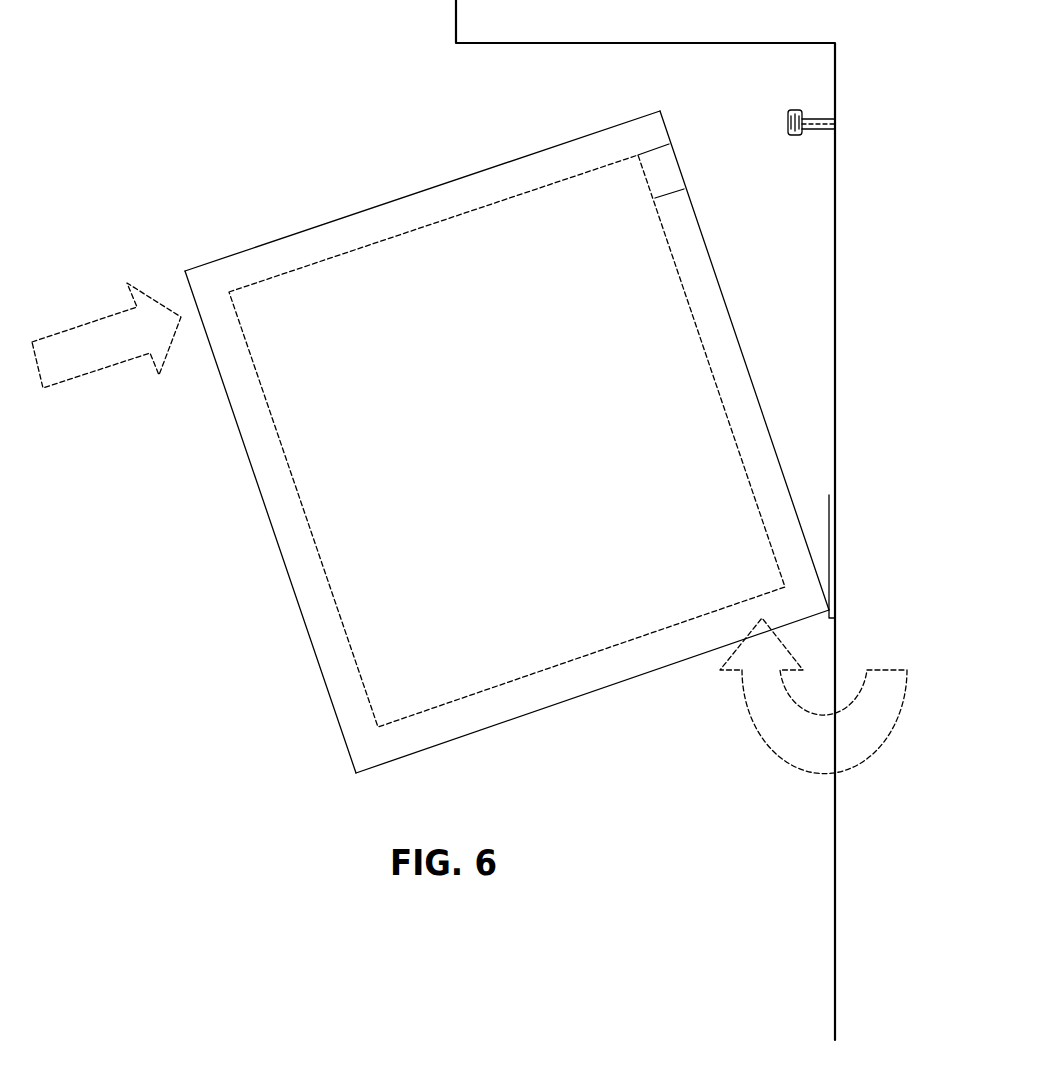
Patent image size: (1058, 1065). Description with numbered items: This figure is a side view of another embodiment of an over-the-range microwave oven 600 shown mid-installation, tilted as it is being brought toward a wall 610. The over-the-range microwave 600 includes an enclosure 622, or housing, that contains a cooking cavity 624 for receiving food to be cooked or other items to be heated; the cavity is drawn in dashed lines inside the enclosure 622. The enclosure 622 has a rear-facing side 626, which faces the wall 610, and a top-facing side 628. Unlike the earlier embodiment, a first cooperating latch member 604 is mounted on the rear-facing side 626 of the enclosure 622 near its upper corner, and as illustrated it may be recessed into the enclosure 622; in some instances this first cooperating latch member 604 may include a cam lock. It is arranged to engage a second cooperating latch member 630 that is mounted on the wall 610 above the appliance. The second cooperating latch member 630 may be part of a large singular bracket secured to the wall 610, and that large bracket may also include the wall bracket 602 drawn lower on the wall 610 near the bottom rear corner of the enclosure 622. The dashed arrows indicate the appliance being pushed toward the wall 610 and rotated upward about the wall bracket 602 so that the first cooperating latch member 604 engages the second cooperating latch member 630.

The over-the-range microwave oven 600 is at (449, 442).
The wall bracket 602 is at (830, 498).
The first cooperating latch member 604 is at (667, 172).
The wall 610 is at (835, 182).
The enclosure 622 is at (283, 563).
The cooking cavity 624 is at (348, 645).
The rear-facing side 626 is at (743, 357).
The top-facing side 628 is at (383, 200).
The second cooperating latch member 630 is at (822, 127).